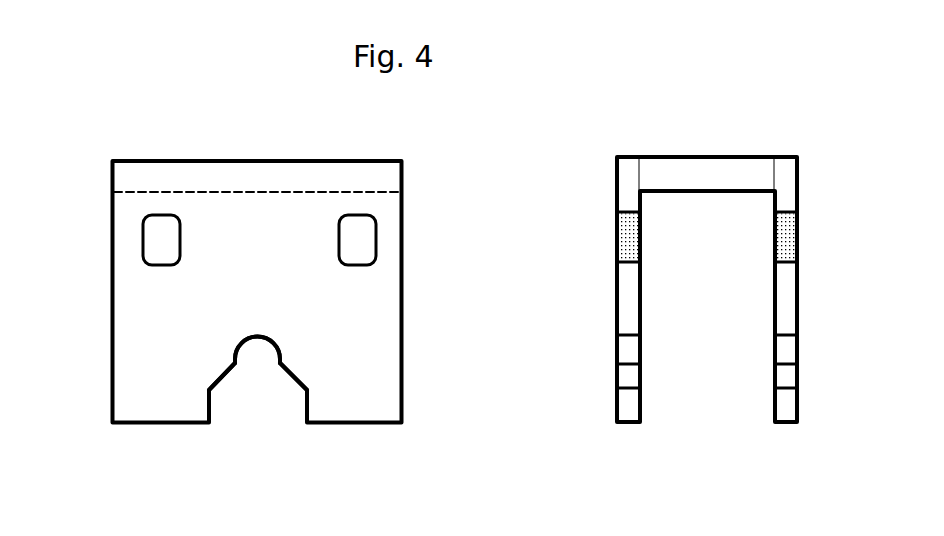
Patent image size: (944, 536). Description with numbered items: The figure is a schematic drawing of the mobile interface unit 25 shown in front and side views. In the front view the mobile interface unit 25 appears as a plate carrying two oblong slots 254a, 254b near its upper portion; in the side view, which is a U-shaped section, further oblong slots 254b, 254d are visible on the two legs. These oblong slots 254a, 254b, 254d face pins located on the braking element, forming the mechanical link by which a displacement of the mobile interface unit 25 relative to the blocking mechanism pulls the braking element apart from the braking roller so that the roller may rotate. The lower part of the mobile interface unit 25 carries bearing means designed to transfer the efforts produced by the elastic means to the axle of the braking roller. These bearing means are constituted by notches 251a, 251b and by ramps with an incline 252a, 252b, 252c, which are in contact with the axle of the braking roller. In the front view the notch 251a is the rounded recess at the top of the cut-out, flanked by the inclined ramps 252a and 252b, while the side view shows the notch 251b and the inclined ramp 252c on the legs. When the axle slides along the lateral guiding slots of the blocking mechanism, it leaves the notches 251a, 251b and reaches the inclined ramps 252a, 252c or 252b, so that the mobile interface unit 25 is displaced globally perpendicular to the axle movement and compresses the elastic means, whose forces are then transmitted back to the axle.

The mobile interface unit 25 is at (280, 218).
The oblong slot 254a is at (162, 237).
The oblong slot 254b is at (625, 243).
The oblong slot 254d is at (785, 236).
The notch 251a is at (267, 336).
The notch 251b is at (788, 357).
The inclined ramp 252a is at (628, 376).
The inclined ramp 252b is at (292, 380).
The inclined ramp 252c is at (782, 378).